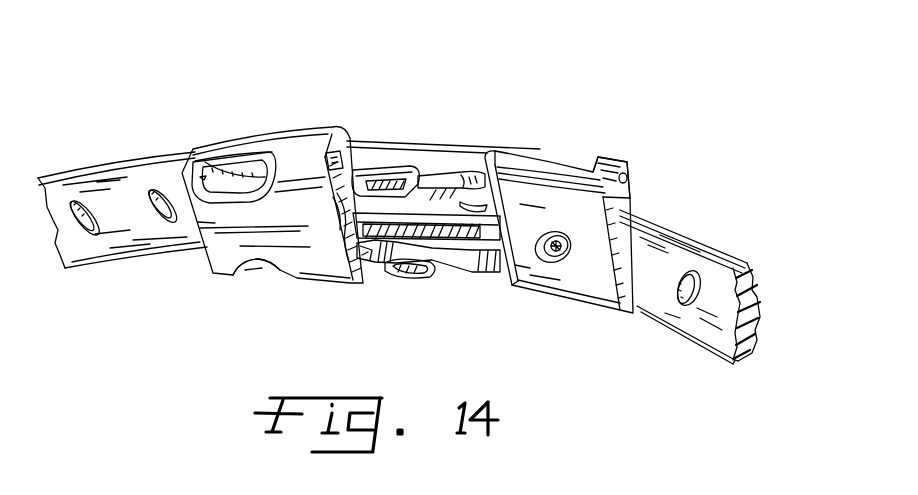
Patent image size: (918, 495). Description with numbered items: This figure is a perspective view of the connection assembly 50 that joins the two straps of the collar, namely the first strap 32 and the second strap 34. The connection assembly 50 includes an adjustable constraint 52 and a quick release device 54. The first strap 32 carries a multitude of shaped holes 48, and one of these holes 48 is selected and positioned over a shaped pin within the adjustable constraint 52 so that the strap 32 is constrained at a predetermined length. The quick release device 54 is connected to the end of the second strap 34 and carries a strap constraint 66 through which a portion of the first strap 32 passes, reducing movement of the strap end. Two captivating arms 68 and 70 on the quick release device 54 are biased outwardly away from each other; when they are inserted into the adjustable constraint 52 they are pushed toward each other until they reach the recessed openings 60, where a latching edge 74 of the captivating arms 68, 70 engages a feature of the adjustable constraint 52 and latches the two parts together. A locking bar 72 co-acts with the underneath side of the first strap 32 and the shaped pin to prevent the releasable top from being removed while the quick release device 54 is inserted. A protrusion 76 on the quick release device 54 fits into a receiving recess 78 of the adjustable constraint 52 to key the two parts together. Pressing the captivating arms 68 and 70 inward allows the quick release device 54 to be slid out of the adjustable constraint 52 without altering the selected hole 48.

The connection assembly 50 is at (466, 86).
The first strap 32 is at (112, 158).
The second strap 34 is at (713, 247).
The shaped hole 48 is at (90, 233).
The adjustable constraint 52 is at (260, 117).
The quick release device 54 is at (563, 297).
The recessed openings 60 is at (260, 273).
The strap constraint 66 is at (627, 172).
The captivating arm 68 is at (410, 273).
The captivating arm 70 is at (390, 168).
The locking bar 72 is at (393, 242).
The latching edge 74 is at (428, 190).
The protrusion 76 is at (483, 157).
The receiving recess 78 is at (322, 160).